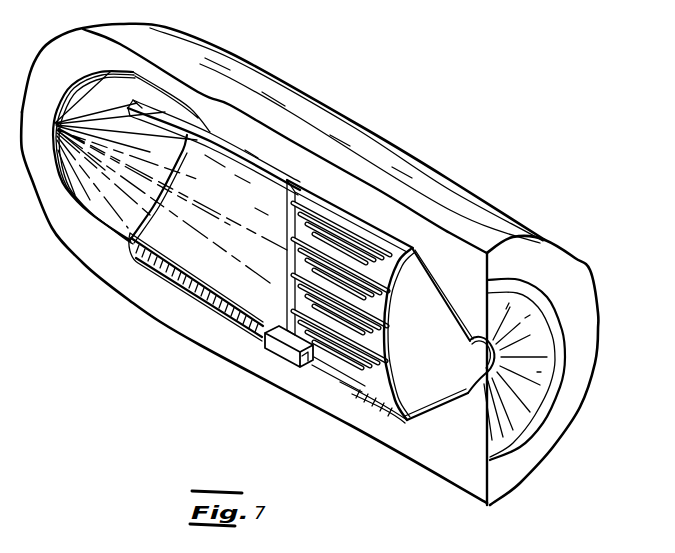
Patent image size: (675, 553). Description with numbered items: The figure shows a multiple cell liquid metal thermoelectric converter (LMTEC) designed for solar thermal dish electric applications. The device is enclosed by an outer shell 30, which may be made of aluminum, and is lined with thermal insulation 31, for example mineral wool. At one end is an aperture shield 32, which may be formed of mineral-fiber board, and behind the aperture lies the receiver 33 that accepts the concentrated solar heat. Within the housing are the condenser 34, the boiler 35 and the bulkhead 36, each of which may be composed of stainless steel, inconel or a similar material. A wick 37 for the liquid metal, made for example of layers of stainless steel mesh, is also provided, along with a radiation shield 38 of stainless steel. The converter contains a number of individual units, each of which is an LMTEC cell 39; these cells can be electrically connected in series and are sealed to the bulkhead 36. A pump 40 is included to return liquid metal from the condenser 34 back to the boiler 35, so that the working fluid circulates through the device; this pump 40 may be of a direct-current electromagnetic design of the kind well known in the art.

The outer shell 30 is at (560, 275).
The thermal insulation 31 is at (448, 437).
The aperture shield 32 is at (533, 362).
The receiver 33 is at (417, 387).
The condenser 34 is at (188, 135).
The boiler 35 is at (372, 403).
The bulkhead 36 is at (310, 190).
The wick 37 is at (347, 390).
The radiation shield 38 is at (130, 243).
The LMTEC cell 39 is at (370, 227).
The pump 40 is at (267, 347).